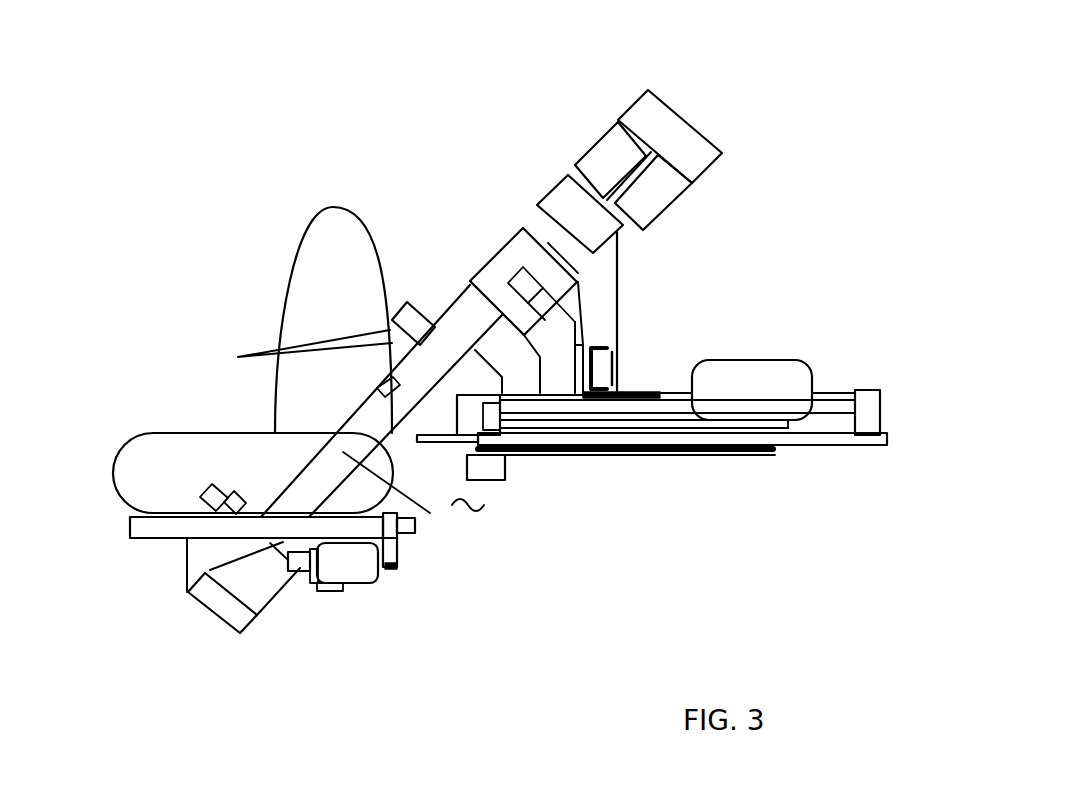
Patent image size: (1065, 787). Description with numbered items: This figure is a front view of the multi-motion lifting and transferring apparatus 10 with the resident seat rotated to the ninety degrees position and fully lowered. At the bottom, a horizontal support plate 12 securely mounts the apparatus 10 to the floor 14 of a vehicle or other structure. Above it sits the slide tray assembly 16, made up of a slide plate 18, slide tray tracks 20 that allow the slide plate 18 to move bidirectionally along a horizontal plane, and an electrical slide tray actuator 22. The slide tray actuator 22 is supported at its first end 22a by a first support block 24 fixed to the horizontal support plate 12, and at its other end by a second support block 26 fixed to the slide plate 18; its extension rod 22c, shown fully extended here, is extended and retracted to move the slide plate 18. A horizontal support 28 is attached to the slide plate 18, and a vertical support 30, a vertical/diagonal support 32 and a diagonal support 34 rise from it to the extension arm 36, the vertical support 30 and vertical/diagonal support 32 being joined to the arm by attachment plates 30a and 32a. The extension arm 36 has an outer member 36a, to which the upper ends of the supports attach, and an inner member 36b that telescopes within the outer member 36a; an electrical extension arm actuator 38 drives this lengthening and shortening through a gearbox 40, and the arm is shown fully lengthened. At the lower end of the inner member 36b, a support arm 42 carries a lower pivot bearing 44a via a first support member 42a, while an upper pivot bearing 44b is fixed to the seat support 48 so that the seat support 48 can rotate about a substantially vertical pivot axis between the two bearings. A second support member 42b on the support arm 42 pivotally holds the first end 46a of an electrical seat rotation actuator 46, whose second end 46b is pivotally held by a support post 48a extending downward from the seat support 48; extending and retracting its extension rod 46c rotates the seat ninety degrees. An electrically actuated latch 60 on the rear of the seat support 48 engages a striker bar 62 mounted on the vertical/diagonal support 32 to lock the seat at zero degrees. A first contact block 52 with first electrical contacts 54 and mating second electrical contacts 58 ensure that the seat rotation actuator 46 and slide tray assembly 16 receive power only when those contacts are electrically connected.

The multi-motion lifting and transferring apparatus 10 is at (283, 171).
The horizontal support plate 12 is at (778, 445).
The floor 14 is at (610, 545).
The slide tray assembly 16 is at (667, 468).
The slide plate 18 is at (447, 441).
The slide tray tracks 20 is at (708, 433).
The slide tray actuator 22 is at (767, 375).
The first end 22a is at (832, 402).
The extension rod 22c is at (657, 400).
The first support block 24 is at (873, 402).
The second support block 26 is at (508, 481).
The horizontal support 28 is at (618, 422).
The vertical support 30 is at (600, 262).
The attachment plate 30a is at (568, 200).
The vertical/diagonal support 32 is at (578, 325).
The attachment plate 32a is at (512, 263).
The diagonal support 34 is at (475, 325).
The extension arm 36 is at (448, 178).
The outer member 36a is at (610, 160).
The inner member 36b is at (430, 513).
The extension arm actuator 38 is at (653, 197).
The gearbox 40 is at (668, 137).
The support arm 42 is at (213, 598).
The first support member 42a is at (245, 617).
The second support member 42b is at (290, 580).
The lower pivot bearing 44a is at (330, 592).
The upper pivot bearing 44b is at (293, 537).
The seat rotation actuator 46 is at (358, 563).
The first end 46a is at (305, 577).
The second end 46b is at (391, 567).
The extension rod 46c is at (389, 569).
The seat support 48 is at (203, 547).
The support post 48a is at (398, 563).
The first contact block 52 is at (405, 302).
The first electrical contacts 54 is at (328, 278).
The second electrical contacts 58 is at (240, 510).
The latch 60 is at (393, 550).
The striker bar 62 is at (618, 356).